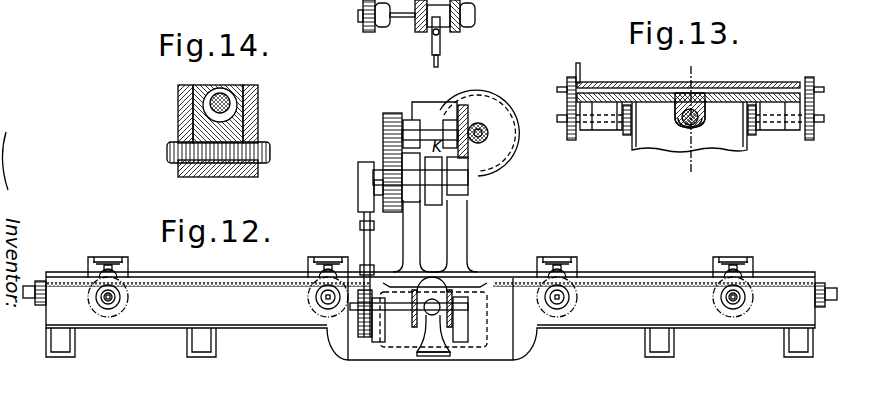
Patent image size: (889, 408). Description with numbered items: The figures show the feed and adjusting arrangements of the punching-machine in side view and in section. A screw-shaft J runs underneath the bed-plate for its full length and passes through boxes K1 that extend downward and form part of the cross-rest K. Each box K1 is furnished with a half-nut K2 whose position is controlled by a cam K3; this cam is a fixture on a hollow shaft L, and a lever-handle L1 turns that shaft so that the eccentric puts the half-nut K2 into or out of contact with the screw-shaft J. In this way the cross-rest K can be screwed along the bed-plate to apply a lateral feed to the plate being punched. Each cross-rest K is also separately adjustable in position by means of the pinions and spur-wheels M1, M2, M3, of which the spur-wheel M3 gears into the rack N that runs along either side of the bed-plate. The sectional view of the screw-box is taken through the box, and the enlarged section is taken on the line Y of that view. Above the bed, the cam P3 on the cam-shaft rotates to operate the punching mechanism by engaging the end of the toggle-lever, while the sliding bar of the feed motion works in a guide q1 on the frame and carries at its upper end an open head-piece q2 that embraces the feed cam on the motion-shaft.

In FIG. 12, the rack N is at (220, 289).
In FIG. 13, the rack N is at (612, 110).
In FIG. 12, the cross-rest K is at (420, 258).
In FIG. 13, the cross-rest K is at (752, 92).
In FIG. 13, the box K1 is at (698, 124).
In FIG. 13, the half-nut K2 is at (676, 110).
In FIG. 14, the half-nut K2 is at (205, 124).
In FIG. 13, the cam K3 is at (698, 96).
In FIG. 14, the cam K3 is at (233, 112).
In FIG. 13, the hollow shaft L is at (628, 83).
In FIG. 14, the hollow shaft L is at (228, 92).
In FIG. 13, the lever-handle L1 is at (582, 75).
In FIG. 13, the screw-shaft J is at (684, 122).
In FIG. 14, the screw-shaft J is at (270, 155).
In FIG. 12, the pinion M1 is at (128, 268).
In FIG. 13, the pinion M1 is at (567, 85).
In FIG. 12, the spur-wheel M2 is at (128, 300).
In FIG. 13, the spur-wheel M2 is at (567, 113).
In FIG. 12, the spur-wheel M3 is at (100, 306).
In FIG. 13, the spur-wheel M3 is at (625, 132).
In FIG. 12, the guide q1 is at (360, 226).
In FIG. 12, the open head-piece q2 is at (358, 196).
In FIG. 12, the cam P3 is at (432, 206).
In FIG. 13, the section line Y Y is at (690, 125).